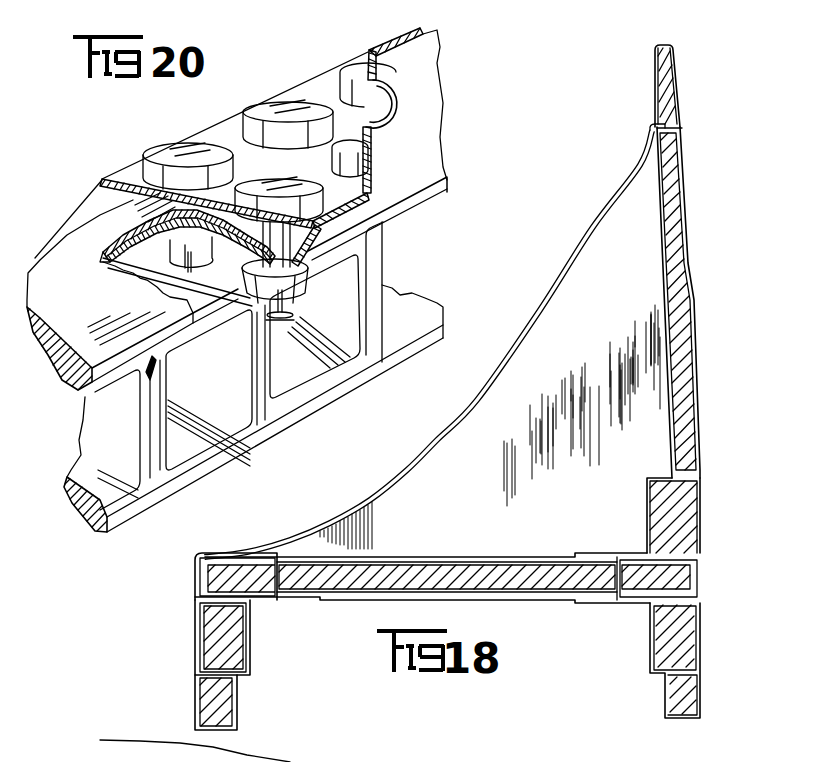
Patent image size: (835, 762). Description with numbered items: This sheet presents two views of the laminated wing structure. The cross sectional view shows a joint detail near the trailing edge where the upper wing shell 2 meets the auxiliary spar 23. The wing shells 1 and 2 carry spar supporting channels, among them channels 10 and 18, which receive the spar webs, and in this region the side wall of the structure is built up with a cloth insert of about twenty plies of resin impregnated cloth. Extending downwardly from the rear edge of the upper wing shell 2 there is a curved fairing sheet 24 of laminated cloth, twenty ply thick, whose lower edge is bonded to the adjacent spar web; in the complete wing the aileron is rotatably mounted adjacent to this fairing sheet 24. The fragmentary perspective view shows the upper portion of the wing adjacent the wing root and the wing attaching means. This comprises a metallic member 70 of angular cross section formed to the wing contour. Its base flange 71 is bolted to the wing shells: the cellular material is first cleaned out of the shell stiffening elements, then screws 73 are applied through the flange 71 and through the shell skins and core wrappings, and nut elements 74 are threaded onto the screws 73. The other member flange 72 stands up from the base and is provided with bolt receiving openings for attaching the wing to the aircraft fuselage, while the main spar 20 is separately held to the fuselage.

In FIG. 20, the metallic member 70 is at (440, 29).
In FIG. 20, the base flange 71 is at (223, 130).
In FIG. 20, the member flange 72 is at (440, 108).
In FIG. 20, the screws 73 is at (262, 182).
In FIG. 20, the nut elements 74 is at (302, 300).
In FIG. 18, the upper wing shell 2 is at (698, 338).
In FIG. 18, the spar 20 is at (679, 75).
In FIG. 18, the curved fairing sheet 24 is at (403, 470).
In FIG. 18, the auxiliary spar 23 is at (505, 600).
In FIG. 18, the spar supporting channel 18 is at (586, 600).
In FIG. 18, the spar supporting channel 10 is at (307, 610).
In FIG. 18, the wing shell 1 is at (240, 708).